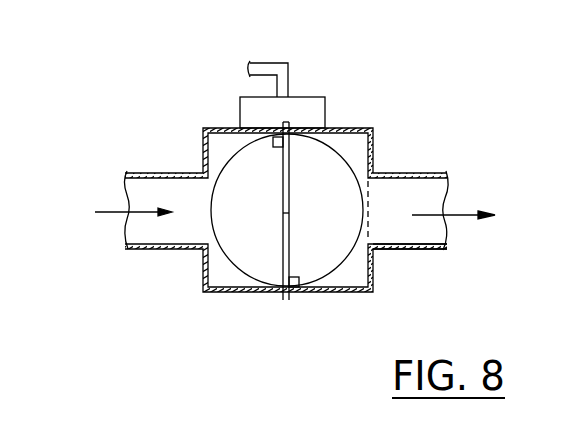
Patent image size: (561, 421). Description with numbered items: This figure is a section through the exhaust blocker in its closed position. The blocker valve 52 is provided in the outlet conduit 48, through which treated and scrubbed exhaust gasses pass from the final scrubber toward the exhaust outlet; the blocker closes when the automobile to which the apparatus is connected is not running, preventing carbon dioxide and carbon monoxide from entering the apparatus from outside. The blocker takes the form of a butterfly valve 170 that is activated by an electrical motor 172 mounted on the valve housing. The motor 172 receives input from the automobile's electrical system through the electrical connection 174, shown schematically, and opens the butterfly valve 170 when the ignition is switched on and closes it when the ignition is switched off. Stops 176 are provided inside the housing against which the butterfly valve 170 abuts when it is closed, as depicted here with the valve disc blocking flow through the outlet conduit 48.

The blocker valve 52 is at (128, 97).
The outlet conduit 48 is at (412, 230).
The butterfly valve 170 is at (286, 243).
The electrical motor 172 is at (322, 108).
The electrical connection 174 is at (287, 73).
The stops 176 is at (272, 138).